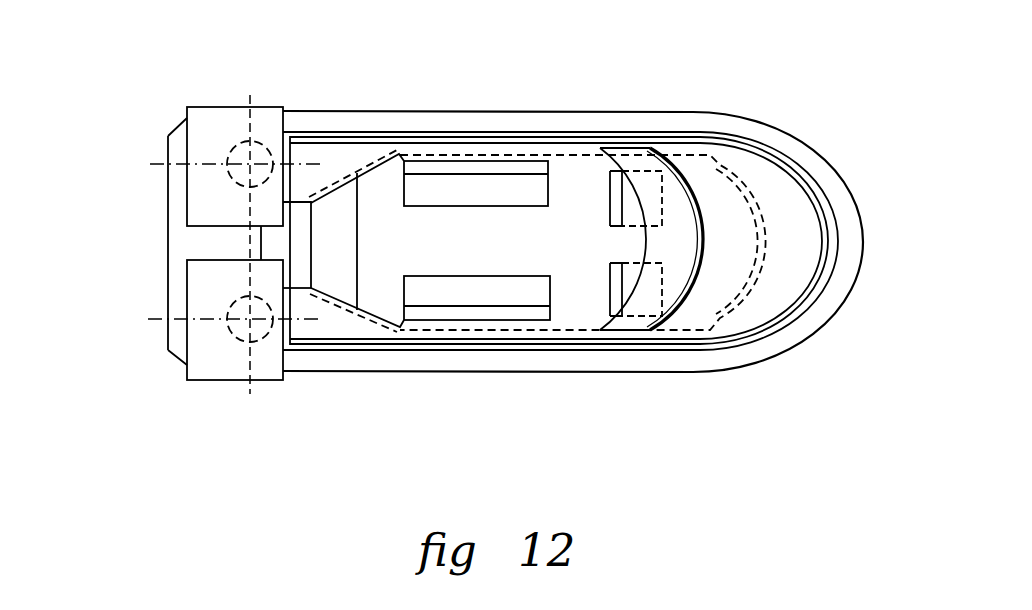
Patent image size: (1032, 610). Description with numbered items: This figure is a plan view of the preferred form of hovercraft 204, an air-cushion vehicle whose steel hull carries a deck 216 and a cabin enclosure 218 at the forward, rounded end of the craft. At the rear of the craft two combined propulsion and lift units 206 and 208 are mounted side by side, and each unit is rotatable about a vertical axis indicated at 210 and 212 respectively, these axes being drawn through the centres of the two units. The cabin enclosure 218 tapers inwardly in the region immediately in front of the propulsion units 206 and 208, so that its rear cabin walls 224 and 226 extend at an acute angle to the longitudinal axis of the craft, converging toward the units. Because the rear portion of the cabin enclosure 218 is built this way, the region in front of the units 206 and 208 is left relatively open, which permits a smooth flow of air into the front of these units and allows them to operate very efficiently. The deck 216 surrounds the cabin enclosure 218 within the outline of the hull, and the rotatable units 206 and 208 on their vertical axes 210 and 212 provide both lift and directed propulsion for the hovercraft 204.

The hovercraft 204 is at (542, 115).
The combined propulsion and lift unit 206 is at (263, 370).
The combined propulsion and lift unit 208 is at (262, 122).
The vertical axis 210 is at (233, 148).
The vertical axis 212 is at (243, 318).
The deck 216 is at (688, 124).
The cabin enclosure 218 is at (588, 312).
The rear cabin wall 224 is at (362, 165).
The rear cabin wall 226 is at (368, 323).